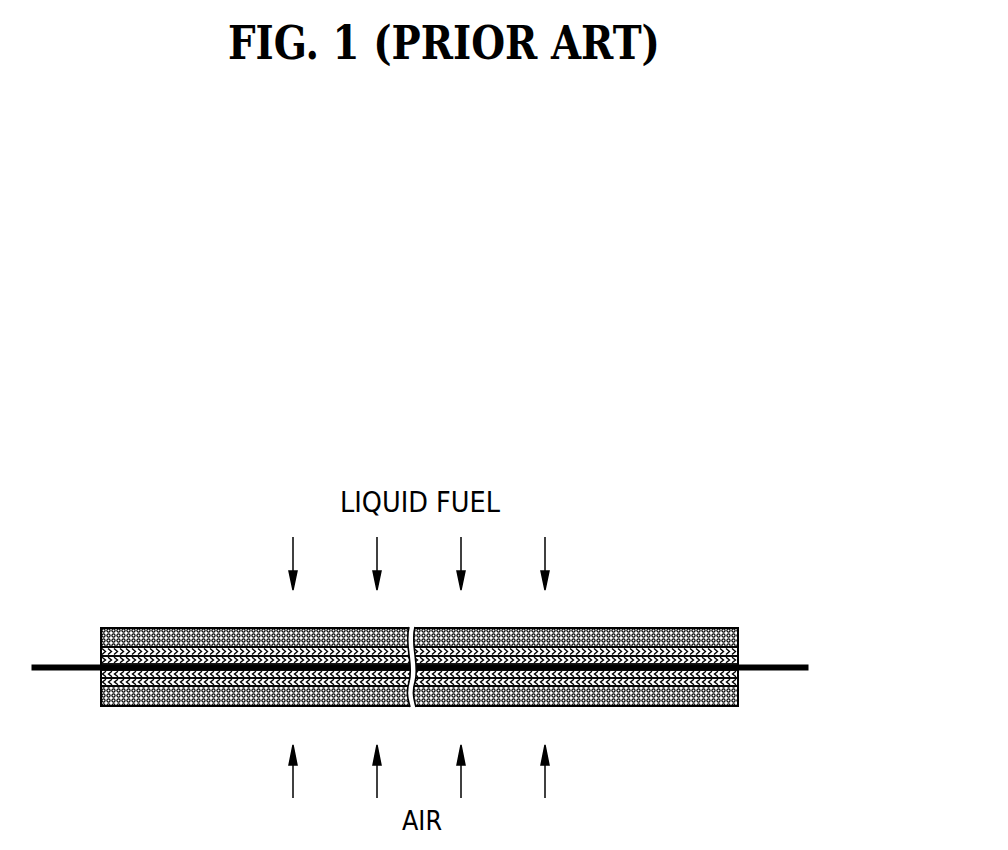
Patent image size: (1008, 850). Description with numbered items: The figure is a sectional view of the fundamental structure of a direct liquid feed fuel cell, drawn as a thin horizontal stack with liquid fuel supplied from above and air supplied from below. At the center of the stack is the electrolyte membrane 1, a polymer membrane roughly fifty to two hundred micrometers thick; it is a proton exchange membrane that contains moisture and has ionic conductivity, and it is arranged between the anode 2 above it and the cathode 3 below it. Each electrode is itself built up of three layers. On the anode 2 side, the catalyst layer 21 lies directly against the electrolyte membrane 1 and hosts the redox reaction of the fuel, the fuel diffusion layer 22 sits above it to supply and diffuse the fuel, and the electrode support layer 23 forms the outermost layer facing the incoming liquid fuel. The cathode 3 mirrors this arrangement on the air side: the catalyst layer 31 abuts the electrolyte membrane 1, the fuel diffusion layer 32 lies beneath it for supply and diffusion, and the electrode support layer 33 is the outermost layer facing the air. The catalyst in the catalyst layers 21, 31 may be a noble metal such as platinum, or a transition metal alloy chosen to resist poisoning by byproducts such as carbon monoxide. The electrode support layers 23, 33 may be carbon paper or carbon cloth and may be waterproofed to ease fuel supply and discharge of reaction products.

The electrolyte membrane 1 is at (810, 669).
The anode 2 is at (473, 627).
The catalyst layer 21 is at (739, 660).
The fuel diffusion layer 22 is at (739, 652).
The electrode support layer 23 is at (739, 632).
The cathode 3 is at (473, 708).
The catalyst layer 31 is at (739, 675).
The fuel diffusion layer 32 is at (739, 683).
The electrode support layer 33 is at (739, 695).